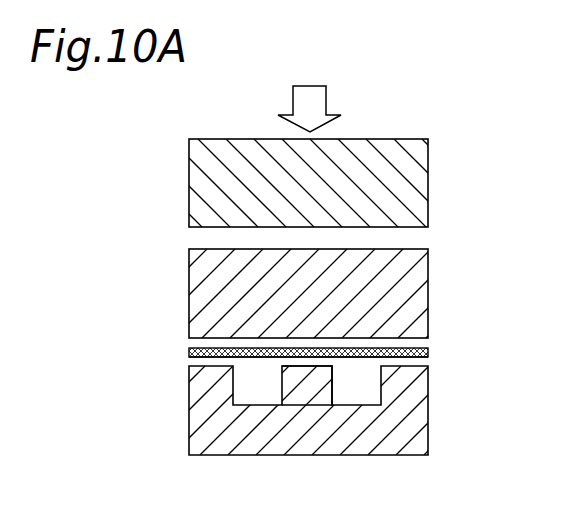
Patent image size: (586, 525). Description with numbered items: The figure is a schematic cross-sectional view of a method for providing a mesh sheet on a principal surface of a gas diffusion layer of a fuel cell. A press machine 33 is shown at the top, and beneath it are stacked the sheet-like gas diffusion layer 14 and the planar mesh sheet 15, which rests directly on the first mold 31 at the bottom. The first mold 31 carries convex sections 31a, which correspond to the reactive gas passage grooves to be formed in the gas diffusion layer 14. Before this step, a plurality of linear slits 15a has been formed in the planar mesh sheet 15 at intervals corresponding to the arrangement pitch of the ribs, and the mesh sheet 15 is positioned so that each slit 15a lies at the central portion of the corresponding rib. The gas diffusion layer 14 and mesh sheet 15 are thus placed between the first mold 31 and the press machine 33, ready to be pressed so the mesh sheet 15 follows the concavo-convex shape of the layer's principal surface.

The press machine 33 is at (200, 178).
The sheet-like gas diffusion layer 14 is at (200, 288).
The planar mesh sheet 15 is at (190, 351).
The linear slit 15a is at (228, 359).
The first mold 31 is at (414, 423).
The convex section 31a is at (305, 383).